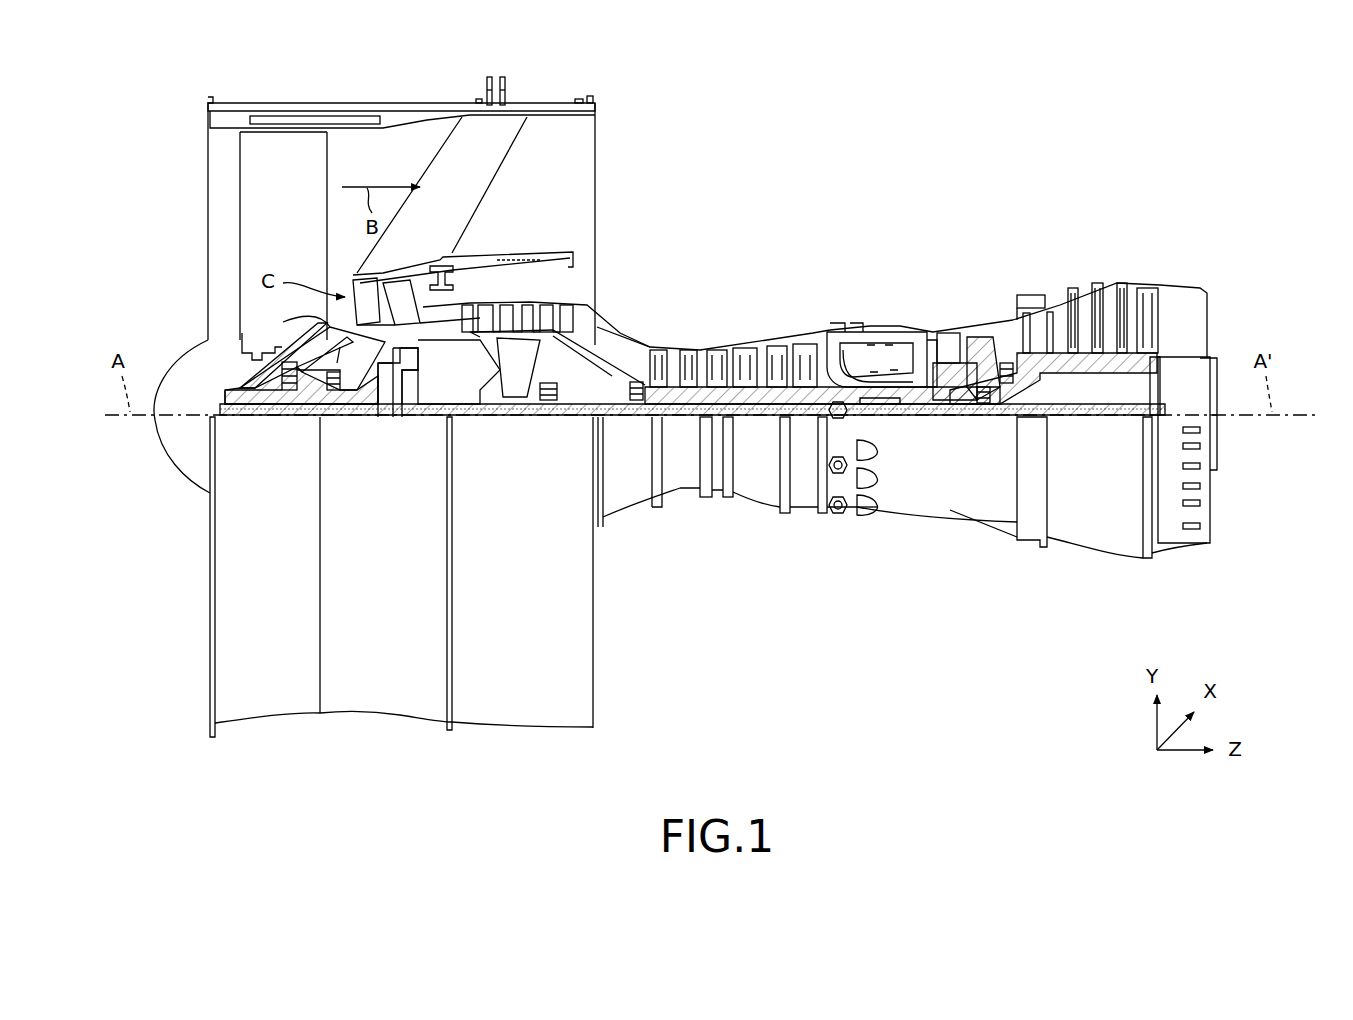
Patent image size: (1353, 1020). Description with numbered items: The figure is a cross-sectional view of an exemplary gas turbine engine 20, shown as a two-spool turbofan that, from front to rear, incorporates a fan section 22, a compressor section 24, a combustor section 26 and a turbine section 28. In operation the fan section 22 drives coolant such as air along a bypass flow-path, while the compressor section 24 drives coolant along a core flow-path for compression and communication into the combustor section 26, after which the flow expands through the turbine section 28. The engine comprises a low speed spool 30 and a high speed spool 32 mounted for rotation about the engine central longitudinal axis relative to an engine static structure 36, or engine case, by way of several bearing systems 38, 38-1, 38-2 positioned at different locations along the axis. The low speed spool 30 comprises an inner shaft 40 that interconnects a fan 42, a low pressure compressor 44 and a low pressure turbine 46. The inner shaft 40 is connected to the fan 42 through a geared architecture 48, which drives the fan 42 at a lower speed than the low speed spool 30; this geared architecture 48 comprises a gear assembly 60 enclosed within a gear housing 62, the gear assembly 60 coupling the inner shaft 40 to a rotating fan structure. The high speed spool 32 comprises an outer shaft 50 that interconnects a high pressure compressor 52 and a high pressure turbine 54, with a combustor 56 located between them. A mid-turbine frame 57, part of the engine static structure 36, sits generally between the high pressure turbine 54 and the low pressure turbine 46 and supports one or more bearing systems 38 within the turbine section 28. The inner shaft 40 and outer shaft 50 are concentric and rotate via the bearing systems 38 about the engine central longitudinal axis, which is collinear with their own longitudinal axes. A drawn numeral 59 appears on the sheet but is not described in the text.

The gas turbine engine 20 is at (931, 136).
The fan section 22 is at (445, 83).
The compressor section 24 is at (457, 212).
The combustor section 26 is at (822, 208).
The turbine section 28 is at (1150, 203).
The low speed spool 30 is at (764, 430).
The high speed spool 32 is at (800, 383).
The engine static structure 36 is at (380, 700).
The bearing system 38 is at (995, 404).
The bearing system 38-1 is at (297, 392).
The bearing system 38-2 is at (548, 402).
The inner shaft 40 is at (615, 417).
The fan 42 is at (268, 233).
The low pressure compressor 44 is at (525, 315).
The low pressure turbine 46 is at (1083, 302).
The geared architecture 48 is at (411, 432).
The outer shaft 50 is at (876, 405).
The high pressure compressor 52 is at (745, 380).
The high pressure turbine 54 is at (947, 333).
The combustor 56 is at (873, 353).
The mid-turbine frame 57 is at (987, 380).
The airfoils/vanes 59 is at (1000, 340).
The gear assembly 60 is at (420, 397).
The gear housing 62 is at (418, 368).